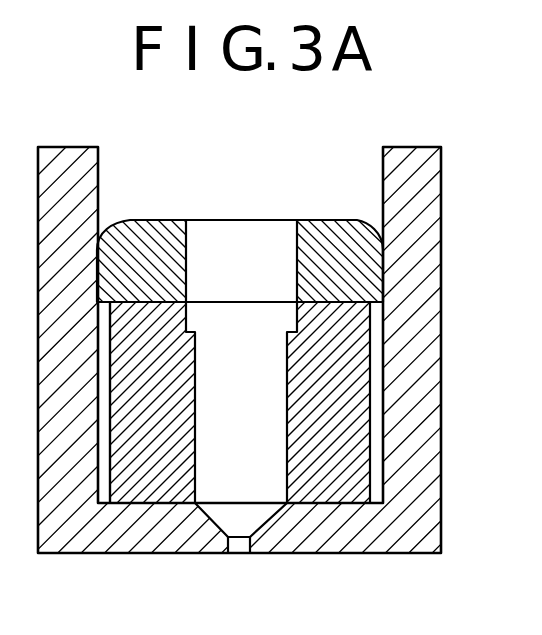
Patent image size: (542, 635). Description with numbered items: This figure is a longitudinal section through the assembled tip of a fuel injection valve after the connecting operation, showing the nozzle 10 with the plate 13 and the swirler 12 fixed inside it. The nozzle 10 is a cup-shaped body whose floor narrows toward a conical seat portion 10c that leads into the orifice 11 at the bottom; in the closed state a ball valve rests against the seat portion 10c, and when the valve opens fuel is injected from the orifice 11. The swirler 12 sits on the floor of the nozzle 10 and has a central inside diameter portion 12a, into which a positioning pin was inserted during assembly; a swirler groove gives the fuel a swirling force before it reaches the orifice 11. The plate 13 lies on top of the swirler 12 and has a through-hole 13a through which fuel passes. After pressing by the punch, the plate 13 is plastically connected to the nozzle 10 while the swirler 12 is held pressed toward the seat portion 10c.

The nozzle 10 is at (426, 175).
The seat portion 10c is at (275, 517).
The orifice 11 is at (230, 542).
The swirler 12 is at (370, 430).
The inside diameter portion 12a is at (133, 483).
The plate 13 is at (360, 284).
The through-hole 13a is at (297, 255).